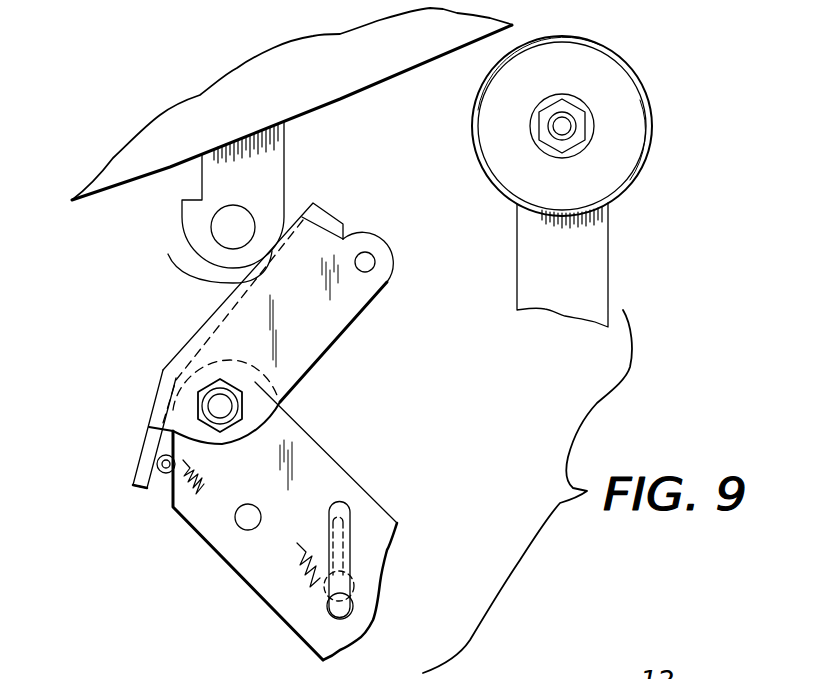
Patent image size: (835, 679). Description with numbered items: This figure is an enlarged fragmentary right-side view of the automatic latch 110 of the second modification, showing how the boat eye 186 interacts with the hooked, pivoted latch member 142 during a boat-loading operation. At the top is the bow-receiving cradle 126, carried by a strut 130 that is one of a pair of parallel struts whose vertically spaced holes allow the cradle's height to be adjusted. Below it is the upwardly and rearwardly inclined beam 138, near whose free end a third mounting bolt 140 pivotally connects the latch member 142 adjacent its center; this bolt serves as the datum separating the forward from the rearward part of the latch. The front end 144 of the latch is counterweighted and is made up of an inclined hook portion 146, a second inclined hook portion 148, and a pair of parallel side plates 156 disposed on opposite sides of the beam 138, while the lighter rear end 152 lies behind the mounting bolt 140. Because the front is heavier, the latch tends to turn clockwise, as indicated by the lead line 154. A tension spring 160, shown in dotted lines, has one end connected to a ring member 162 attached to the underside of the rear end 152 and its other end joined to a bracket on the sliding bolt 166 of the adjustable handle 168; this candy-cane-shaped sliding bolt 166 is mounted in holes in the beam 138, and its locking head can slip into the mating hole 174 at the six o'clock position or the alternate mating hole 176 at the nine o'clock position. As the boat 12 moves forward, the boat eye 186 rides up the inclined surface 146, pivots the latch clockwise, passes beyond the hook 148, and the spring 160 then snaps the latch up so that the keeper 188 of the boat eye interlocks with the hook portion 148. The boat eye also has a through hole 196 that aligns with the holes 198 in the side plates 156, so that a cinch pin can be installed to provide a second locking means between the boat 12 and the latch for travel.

The boat 12 is at (327, 15).
The automatic latch 110 is at (178, 292).
The bow-receiving cradle 126 is at (632, 120).
The strut 130 is at (595, 258).
The inclined beam 138 is at (316, 442).
The third mounting bolt 140 is at (212, 404).
The pivoted latch member 142 is at (225, 280).
The front end 144 is at (361, 302).
The inclined hook portion 146 is at (200, 332).
The inclined hook portion 148 is at (341, 218).
The rear end 152 is at (142, 445).
The lead line 154 is at (358, 338).
The side plates 156 is at (377, 282).
The tension spring 160 is at (187, 517).
The ring member 162 is at (169, 476).
The sliding bolt 166 is at (347, 503).
The adjustable handle 168 is at (352, 543).
The mating hole 174 is at (337, 619).
The alternate mating hole 176 is at (247, 531).
The boat eye 186 is at (288, 142).
The keeper 188 is at (188, 190).
The through hole 196 is at (241, 219).
The aligned holes 198 is at (374, 259).